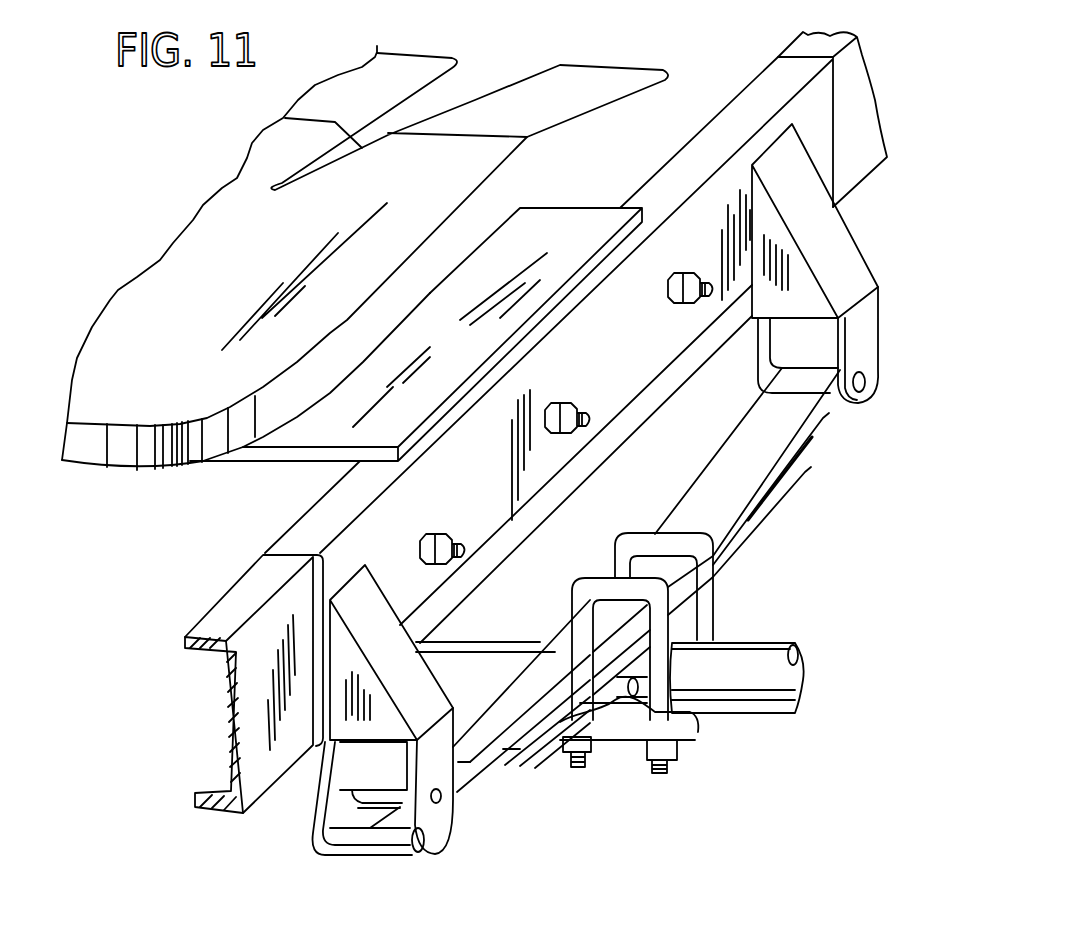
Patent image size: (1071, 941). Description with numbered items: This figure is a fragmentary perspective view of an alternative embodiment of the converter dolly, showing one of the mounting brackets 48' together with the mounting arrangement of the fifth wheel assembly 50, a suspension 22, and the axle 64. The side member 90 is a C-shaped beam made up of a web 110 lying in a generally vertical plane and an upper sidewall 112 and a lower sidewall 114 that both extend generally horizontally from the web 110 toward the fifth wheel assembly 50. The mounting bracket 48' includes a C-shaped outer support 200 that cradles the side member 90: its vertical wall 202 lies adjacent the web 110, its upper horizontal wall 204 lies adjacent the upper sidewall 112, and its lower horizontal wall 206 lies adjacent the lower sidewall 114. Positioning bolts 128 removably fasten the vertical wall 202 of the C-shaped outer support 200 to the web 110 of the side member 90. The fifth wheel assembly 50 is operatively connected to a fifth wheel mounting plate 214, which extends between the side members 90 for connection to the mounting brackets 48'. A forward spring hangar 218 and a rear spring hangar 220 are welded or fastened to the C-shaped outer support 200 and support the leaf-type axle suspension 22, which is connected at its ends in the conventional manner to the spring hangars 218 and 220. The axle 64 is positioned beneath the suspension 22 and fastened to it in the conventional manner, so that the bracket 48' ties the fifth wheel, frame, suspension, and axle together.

The leaf spring 22 is at (792, 514).
The mounting bracket 48' is at (529, 342).
The fifth wheel assembly 50 is at (110, 482).
The axle 64 is at (735, 698).
The side member 90 is at (213, 675).
The web 110 is at (260, 680).
The upper sidewall 112 is at (260, 585).
The lower sidewall 114 is at (217, 787).
The positioning bolts 128 is at (680, 300).
The C-shaped outer support 200 is at (630, 418).
The vertical wall 202 is at (615, 379).
The upper horizontal wall 204 is at (670, 183).
The lower horizontal wall 206 is at (305, 752).
The fifth wheel mounting plate 214 is at (558, 222).
The forward spring hangar 218 is at (428, 812).
The rear spring hangar 220 is at (867, 347).